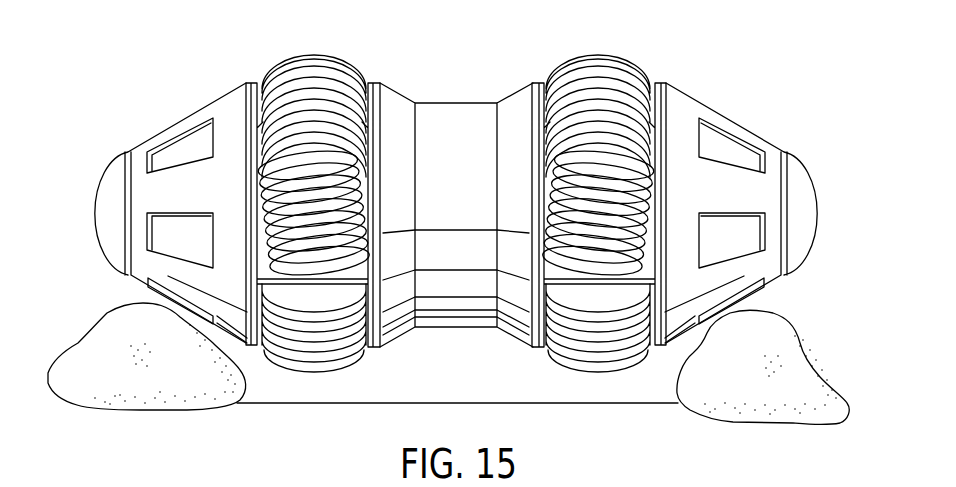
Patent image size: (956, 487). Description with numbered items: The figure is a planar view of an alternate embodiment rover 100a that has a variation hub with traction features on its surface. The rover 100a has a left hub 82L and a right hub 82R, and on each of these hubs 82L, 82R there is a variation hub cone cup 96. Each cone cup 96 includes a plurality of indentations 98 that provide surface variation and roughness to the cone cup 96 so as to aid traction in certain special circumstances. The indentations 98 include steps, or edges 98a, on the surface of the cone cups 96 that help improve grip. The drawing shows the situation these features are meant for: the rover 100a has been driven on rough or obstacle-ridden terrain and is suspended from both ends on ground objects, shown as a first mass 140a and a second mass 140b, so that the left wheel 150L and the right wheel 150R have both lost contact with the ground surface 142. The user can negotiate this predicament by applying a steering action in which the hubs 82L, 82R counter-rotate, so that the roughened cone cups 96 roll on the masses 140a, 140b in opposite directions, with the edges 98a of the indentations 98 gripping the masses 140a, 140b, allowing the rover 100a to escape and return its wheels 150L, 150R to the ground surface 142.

The rover 100a is at (145, 71).
The cone cup 96 is at (213, 101).
The indentations 98 is at (183, 143).
The edges 98a is at (172, 165).
The left hub 82L is at (389, 71).
The right hub 82R is at (521, 64).
The left wheel 150L is at (287, 50).
The right wheel 150R is at (624, 48).
The mass 140a is at (108, 323).
The mass 140b is at (775, 323).
The ground surface 142 is at (533, 403).